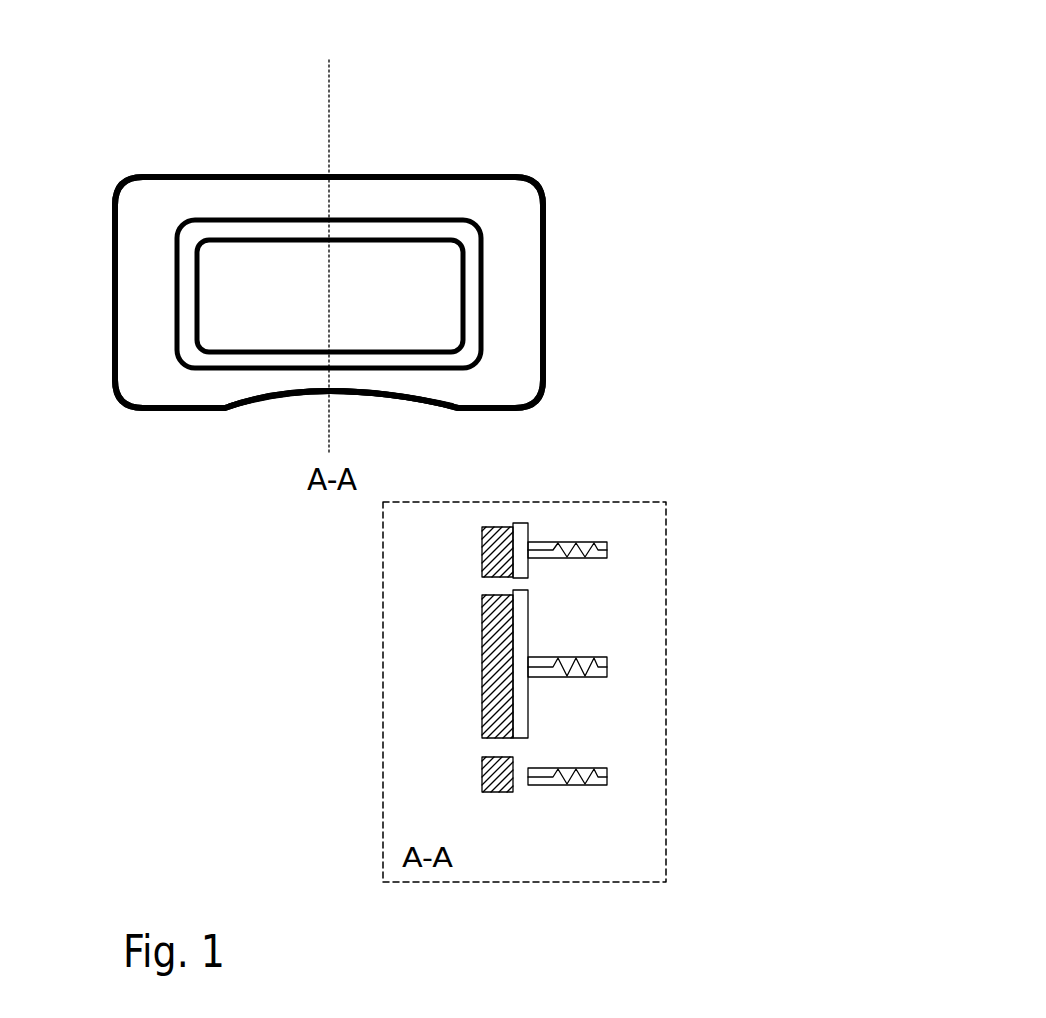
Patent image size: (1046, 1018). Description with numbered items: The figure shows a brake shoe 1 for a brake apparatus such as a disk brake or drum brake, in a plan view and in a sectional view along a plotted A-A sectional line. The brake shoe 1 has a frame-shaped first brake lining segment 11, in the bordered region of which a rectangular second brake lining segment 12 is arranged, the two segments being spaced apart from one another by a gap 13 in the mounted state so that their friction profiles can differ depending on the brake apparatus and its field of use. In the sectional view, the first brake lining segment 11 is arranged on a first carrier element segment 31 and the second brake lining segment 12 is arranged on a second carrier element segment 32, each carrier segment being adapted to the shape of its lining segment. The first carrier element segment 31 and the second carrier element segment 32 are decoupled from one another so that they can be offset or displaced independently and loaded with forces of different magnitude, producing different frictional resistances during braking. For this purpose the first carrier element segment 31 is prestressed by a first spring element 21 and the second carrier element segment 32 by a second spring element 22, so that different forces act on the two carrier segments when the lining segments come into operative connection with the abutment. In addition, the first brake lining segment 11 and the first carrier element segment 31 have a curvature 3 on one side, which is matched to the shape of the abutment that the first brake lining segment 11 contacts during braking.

The brake shoe 1 is at (549, 106).
The curvature 3 is at (374, 420).
The first brake lining segment 11 is at (523, 330).
The second brake lining segment 12 is at (368, 308).
The gap 13 is at (215, 362).
The first spring element 21 is at (597, 540).
The second spring element 22 is at (607, 668).
The first carrier element segment 31 is at (522, 548).
The second carrier element segment 32 is at (520, 640).